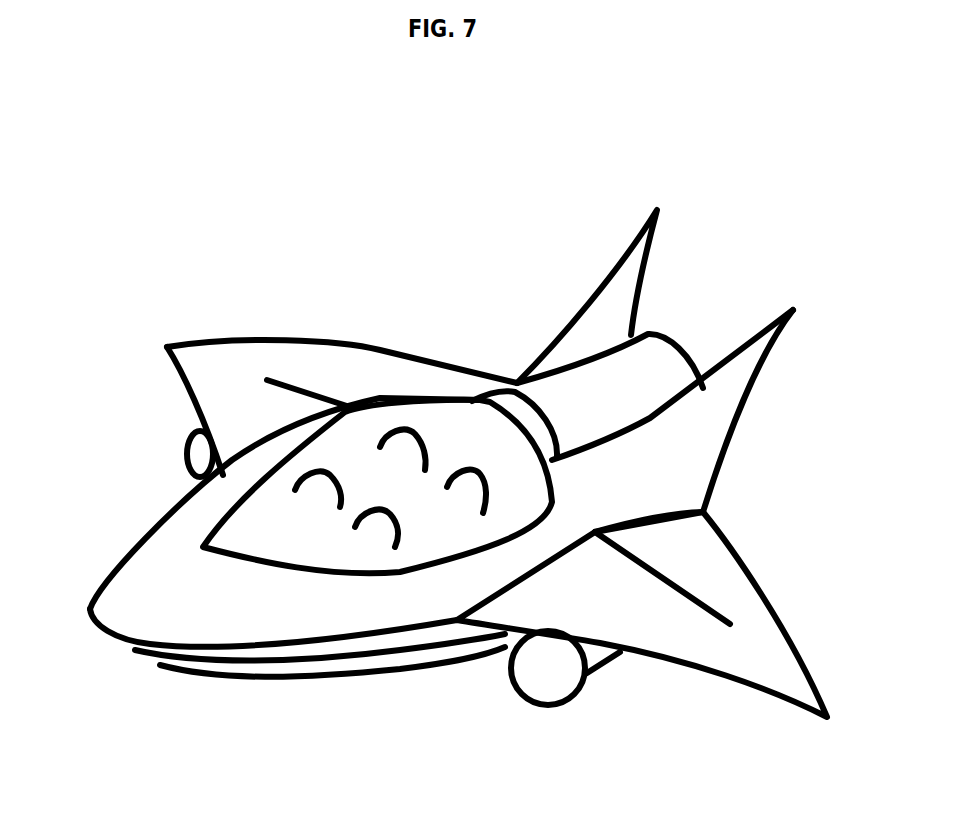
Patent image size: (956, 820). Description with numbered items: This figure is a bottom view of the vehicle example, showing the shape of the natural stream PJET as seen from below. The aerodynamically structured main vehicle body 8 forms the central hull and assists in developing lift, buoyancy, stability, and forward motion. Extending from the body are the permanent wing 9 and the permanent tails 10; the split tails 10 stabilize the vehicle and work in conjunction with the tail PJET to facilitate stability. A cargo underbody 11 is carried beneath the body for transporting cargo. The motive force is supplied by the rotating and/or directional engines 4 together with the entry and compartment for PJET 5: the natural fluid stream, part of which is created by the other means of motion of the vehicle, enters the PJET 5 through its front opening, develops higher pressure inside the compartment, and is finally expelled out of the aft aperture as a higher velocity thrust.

The rotating and/or directional engines 4 is at (181, 440).
The entry and compartment for PJET 5 is at (659, 364).
The main vehicle body 8 is at (312, 551).
The permanent wing 9 is at (374, 618).
The permanent tails 10 is at (262, 346).
The cargo underbody 11 is at (596, 316).